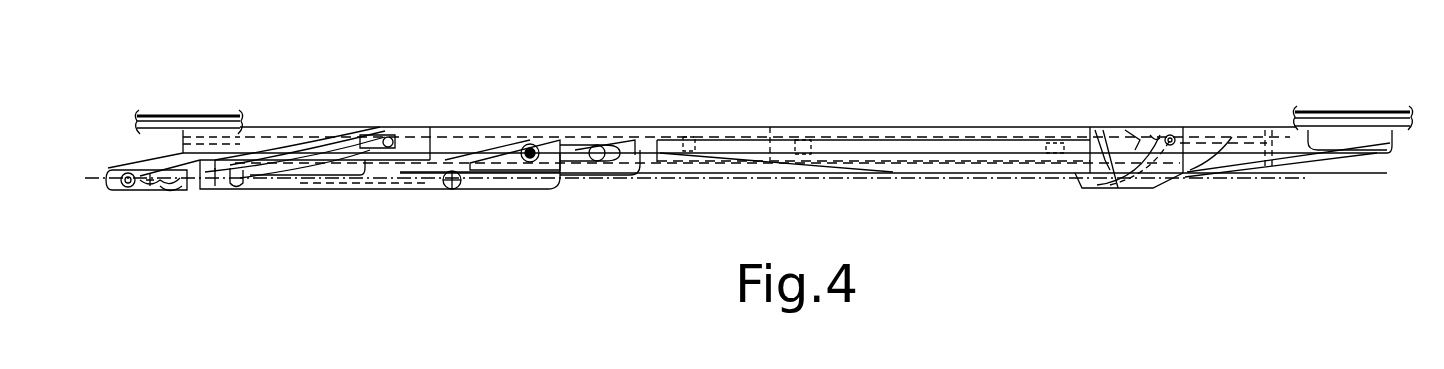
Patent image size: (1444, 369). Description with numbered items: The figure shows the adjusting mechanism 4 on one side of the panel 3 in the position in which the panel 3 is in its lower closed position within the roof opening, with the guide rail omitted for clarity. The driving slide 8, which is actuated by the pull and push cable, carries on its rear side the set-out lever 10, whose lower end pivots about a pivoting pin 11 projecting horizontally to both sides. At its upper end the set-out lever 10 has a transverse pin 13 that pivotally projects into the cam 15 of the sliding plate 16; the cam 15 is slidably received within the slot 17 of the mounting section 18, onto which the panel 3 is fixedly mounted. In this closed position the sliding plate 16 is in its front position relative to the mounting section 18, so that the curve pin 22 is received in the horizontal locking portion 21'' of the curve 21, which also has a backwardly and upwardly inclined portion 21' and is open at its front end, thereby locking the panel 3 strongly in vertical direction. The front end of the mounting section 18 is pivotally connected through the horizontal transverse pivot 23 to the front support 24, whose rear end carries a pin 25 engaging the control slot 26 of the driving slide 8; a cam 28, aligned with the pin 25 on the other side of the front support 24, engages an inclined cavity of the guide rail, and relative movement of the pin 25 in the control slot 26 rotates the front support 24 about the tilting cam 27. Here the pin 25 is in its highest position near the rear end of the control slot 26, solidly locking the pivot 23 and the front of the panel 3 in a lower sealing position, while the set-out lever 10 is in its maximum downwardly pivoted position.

The panel 3 is at (165, 117).
The adjusting mechanism 4 is at (738, 120).
The driving slide 8 is at (400, 190).
The set-out lever 10 is at (500, 142).
The pivoting pin 11 is at (452, 192).
The transverse pin 13 is at (531, 145).
The cam 15 is at (566, 148).
The sliding plate 16 is at (1126, 190).
The slot 17 is at (582, 150).
The mounting section 18 is at (1290, 178).
The curve 21 is at (1139, 94).
The backwardly and upwardly inclined portion 21' is at (1095, 104).
The horizontal locking portion 21'' is at (1185, 88).
The curve pin 22 is at (1175, 135).
The horizontal transverse pivot 23 is at (133, 190).
The front support 24 is at (219, 188).
The pin 25 is at (385, 138).
The control slot 26 is at (338, 135).
The tilting cam 27 is at (158, 192).
The cam 28 is at (368, 152).